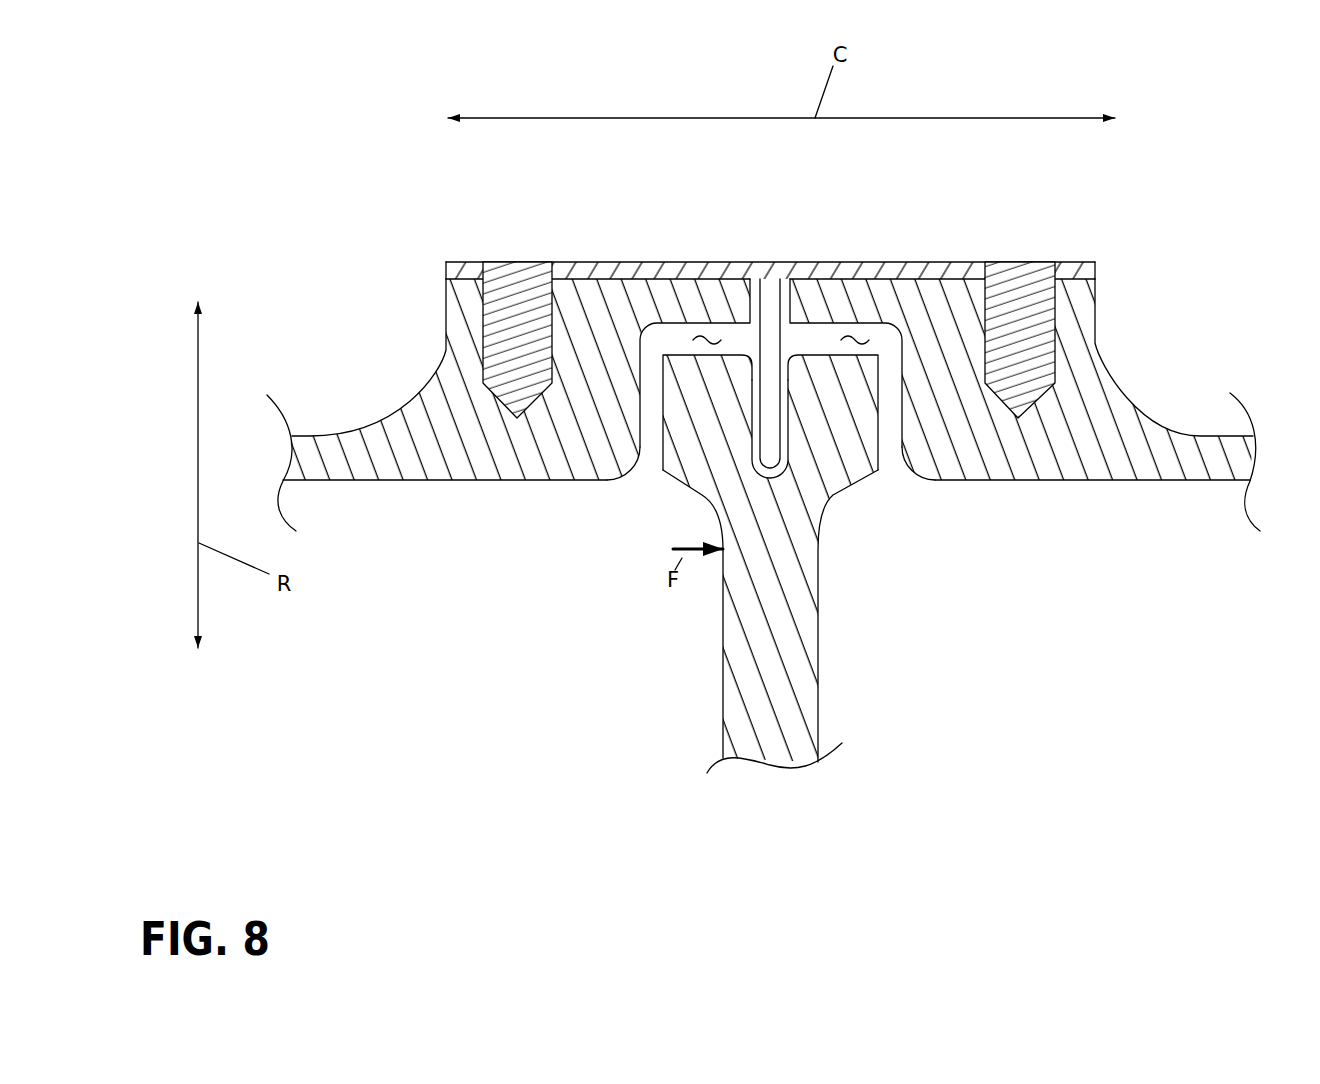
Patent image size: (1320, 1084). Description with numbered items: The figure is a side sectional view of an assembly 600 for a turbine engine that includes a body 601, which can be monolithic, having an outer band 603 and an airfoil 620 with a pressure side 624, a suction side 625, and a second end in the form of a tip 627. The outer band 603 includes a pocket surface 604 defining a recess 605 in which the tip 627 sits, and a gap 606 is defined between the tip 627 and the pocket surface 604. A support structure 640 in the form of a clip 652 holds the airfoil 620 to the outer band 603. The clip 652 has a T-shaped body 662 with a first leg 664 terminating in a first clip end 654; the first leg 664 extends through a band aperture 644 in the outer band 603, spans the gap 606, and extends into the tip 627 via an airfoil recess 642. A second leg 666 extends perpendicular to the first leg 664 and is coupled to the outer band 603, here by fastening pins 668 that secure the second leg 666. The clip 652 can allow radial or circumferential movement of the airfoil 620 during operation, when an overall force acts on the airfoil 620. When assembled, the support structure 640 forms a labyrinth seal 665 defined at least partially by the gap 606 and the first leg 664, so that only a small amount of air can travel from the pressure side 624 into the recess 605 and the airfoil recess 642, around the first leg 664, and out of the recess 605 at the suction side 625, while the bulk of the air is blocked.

The assembly 600 is at (765, 513).
The body 601 is at (765, 433).
The outer band 603 is at (1108, 417).
The pocket surface 604 is at (641, 380).
The recess 605 is at (650, 448).
The gap 606 is at (706, 336).
The airfoil 620 is at (776, 621).
The pressure side 624 is at (723, 707).
The suction side 625 is at (820, 712).
The tip 627 is at (759, 561).
The support structure 640 is at (826, 206).
The airfoil recess 642 is at (796, 466).
The band aperture 644 is at (762, 465).
The clip 652 is at (988, 240).
The first clip end 654 is at (772, 462).
The T-shaped body 662 is at (691, 256).
The first leg 664 is at (793, 323).
The labyrinth seal 665 is at (787, 336).
The second leg 666 is at (570, 278).
The fastening pins 668 is at (500, 300).